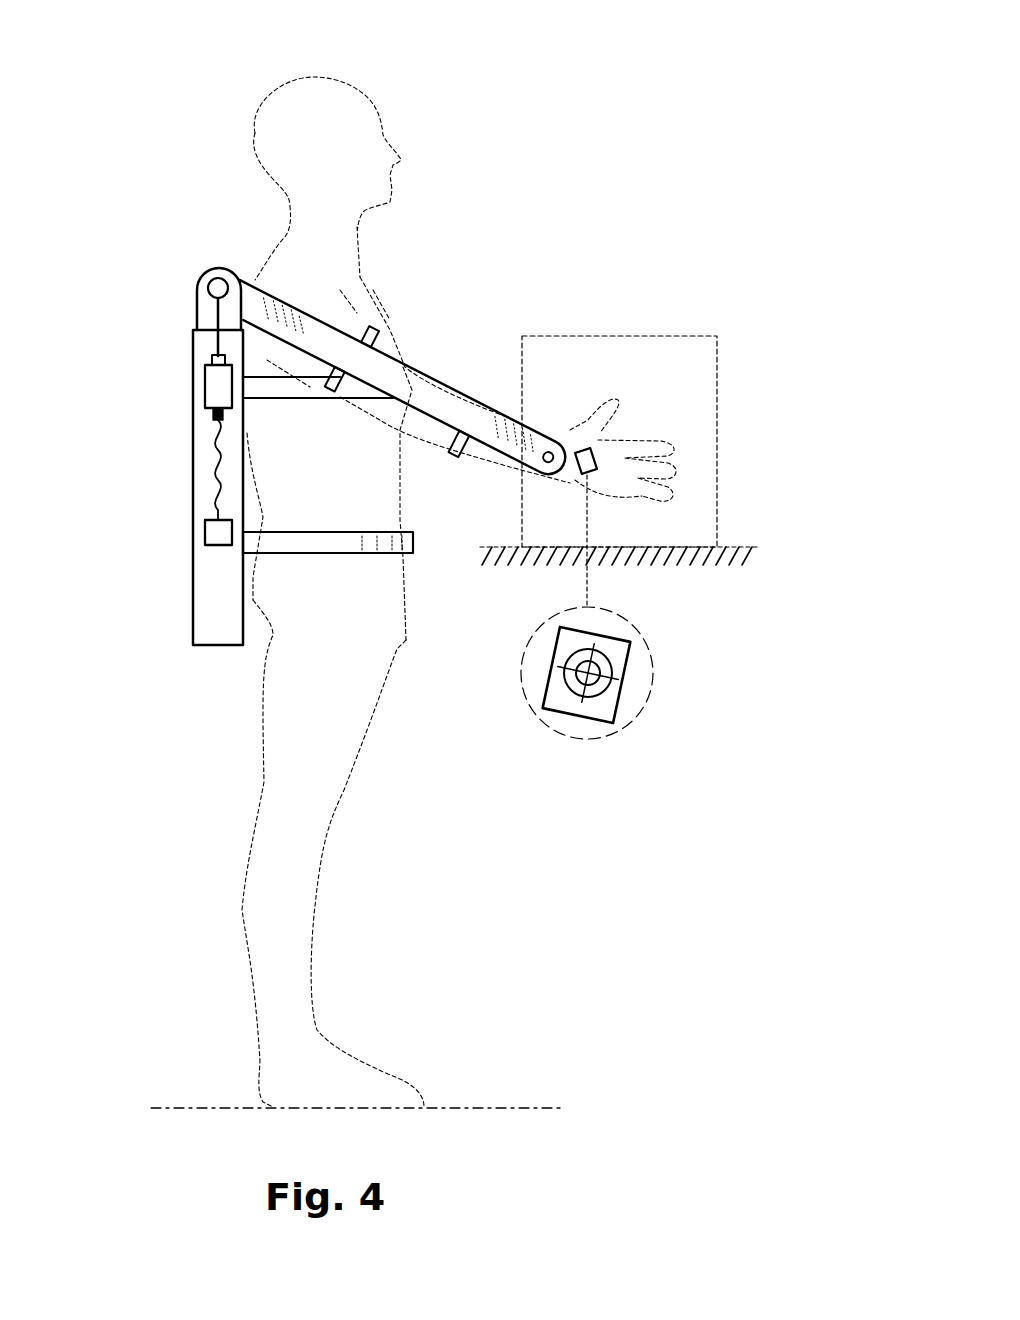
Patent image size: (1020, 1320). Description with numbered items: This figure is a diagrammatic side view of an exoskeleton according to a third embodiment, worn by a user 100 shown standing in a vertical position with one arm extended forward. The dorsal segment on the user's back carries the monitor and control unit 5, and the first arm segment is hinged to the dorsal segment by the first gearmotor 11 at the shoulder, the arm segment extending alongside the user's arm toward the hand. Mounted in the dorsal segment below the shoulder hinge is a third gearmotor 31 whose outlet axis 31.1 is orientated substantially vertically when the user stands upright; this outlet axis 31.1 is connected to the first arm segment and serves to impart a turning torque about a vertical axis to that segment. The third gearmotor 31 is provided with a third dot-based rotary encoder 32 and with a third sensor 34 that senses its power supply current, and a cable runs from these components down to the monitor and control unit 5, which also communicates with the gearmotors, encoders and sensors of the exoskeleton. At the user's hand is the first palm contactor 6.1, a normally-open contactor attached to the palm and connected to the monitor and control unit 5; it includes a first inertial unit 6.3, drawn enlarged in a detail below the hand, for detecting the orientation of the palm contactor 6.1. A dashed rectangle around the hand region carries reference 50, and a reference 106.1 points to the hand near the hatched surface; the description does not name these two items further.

The user 100 is at (385, 87).
The first gearmotor 11 is at (208, 286).
The outlet axis 31.1 is at (212, 318).
The third dot-based rotary encoder 32 is at (212, 360).
The third gearmotor 31 is at (210, 385).
The third sensor 34 is at (212, 416).
The monitor and control unit 5 is at (208, 533).
The working area 50 is at (653, 336).
The hand 106.1 is at (653, 503).
The first palm contactor 6.1 is at (567, 717).
The first inertial unit 6.3 is at (603, 697).